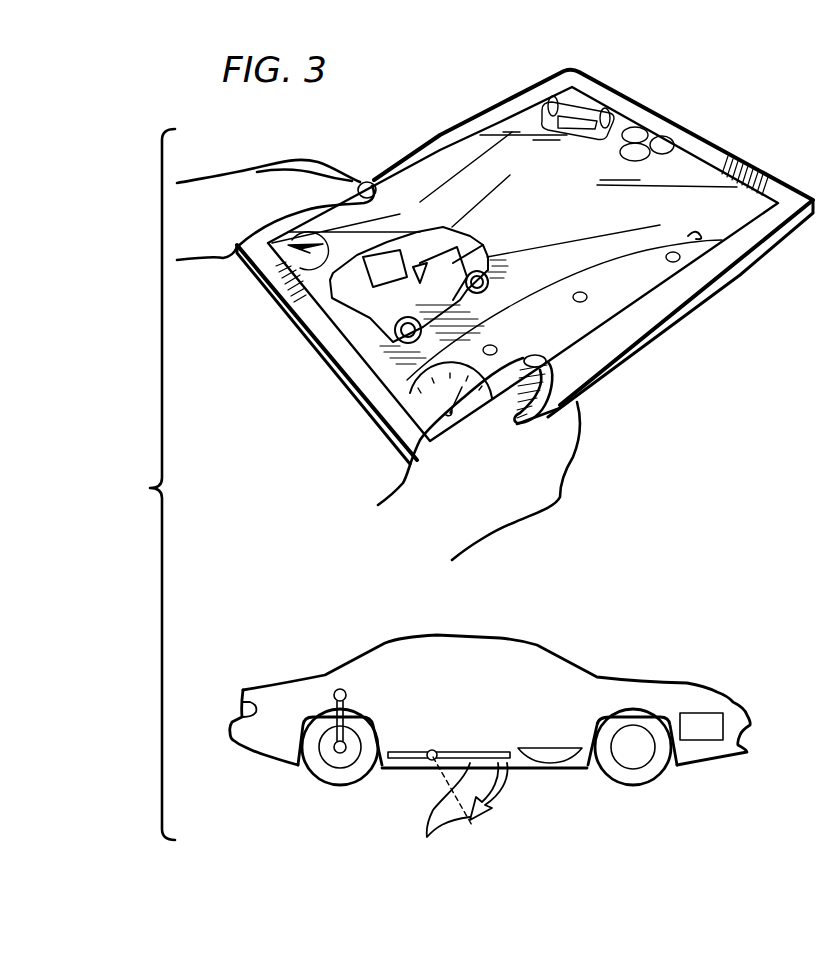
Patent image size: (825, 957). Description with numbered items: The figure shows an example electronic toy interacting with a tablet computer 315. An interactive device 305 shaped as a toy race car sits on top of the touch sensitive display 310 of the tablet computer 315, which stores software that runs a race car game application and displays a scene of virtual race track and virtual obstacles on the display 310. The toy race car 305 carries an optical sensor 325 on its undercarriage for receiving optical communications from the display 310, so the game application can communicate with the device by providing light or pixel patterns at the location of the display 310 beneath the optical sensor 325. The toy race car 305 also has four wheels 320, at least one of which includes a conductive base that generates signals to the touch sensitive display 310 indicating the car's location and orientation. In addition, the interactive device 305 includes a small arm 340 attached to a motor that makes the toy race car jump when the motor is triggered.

The interactive device 305 is at (438, 215).
The touch sensitive display 310 is at (713, 222).
The tablet computer 315 is at (747, 155).
The wheels 320 is at (318, 770).
The optical sensor 325 is at (550, 760).
The small arm 340 is at (458, 812).